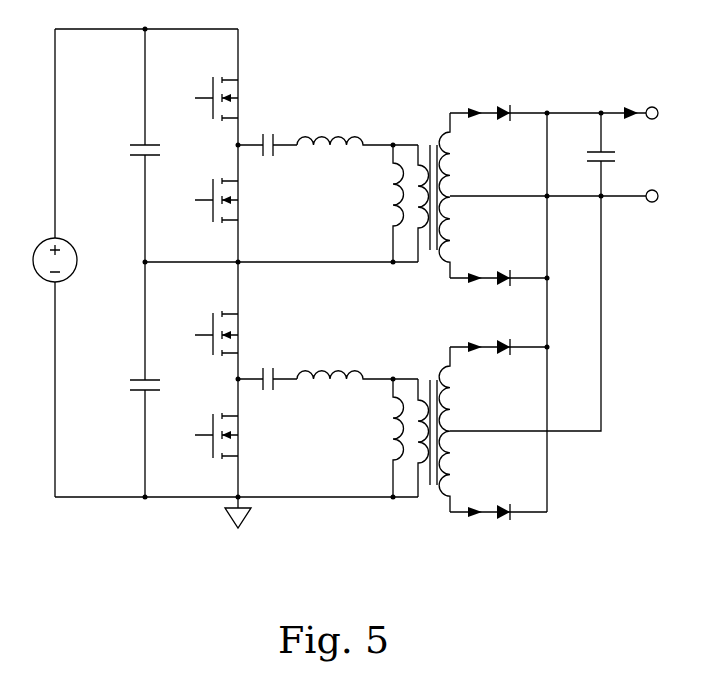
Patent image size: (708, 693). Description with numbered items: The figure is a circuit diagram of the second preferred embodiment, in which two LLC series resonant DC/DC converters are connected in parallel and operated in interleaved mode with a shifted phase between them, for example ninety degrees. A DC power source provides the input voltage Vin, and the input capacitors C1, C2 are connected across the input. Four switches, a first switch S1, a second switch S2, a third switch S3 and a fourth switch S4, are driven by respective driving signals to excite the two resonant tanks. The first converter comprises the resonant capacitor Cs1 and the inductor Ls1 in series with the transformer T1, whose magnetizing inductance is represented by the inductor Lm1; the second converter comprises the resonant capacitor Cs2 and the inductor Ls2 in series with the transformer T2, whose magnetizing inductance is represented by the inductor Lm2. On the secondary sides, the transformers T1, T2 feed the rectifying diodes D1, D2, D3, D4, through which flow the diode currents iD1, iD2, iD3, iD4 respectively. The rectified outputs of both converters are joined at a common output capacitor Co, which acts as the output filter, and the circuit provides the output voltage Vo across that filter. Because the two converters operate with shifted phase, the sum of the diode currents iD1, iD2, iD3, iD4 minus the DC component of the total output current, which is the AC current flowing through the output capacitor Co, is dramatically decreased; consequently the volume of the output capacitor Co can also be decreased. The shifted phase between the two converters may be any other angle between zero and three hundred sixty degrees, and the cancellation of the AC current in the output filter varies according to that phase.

The input voltage Vin is at (44, 250).
The input capacitor C1 is at (132, 151).
The input capacitor C2 is at (132, 386).
The first switch S1 is at (207, 99).
The second switch S2 is at (207, 200).
The third switch S3 is at (207, 333).
The fourth switch S4 is at (207, 436).
The resonant capacitor Cs1 is at (267, 132).
The resonant capacitor Cs2 is at (267, 366).
The inductor Ls1 is at (357, 126).
The inductor Ls2 is at (357, 360).
The inductor Lm1 is at (379, 203).
The inductor Lm2 is at (379, 438).
The transformer T1 is at (532, 195).
The transformer T2 is at (434, 429).
The rectifying diode D1 is at (525, 127).
The rectifying diode D2 is at (498, 292).
The rectifying diode D3 is at (498, 362).
The rectifying diode D4 is at (498, 528).
The current of rectifying diode D1 iD1 is at (476, 100).
The current of rectifying diode D2 iD2 is at (476, 265).
The current of rectifying diode D3 iD3 is at (476, 334).
The current of rectifying diode D4 iD4 is at (476, 499).
The common output capacitor Co is at (588, 154).
The output voltage Vo is at (636, 154).